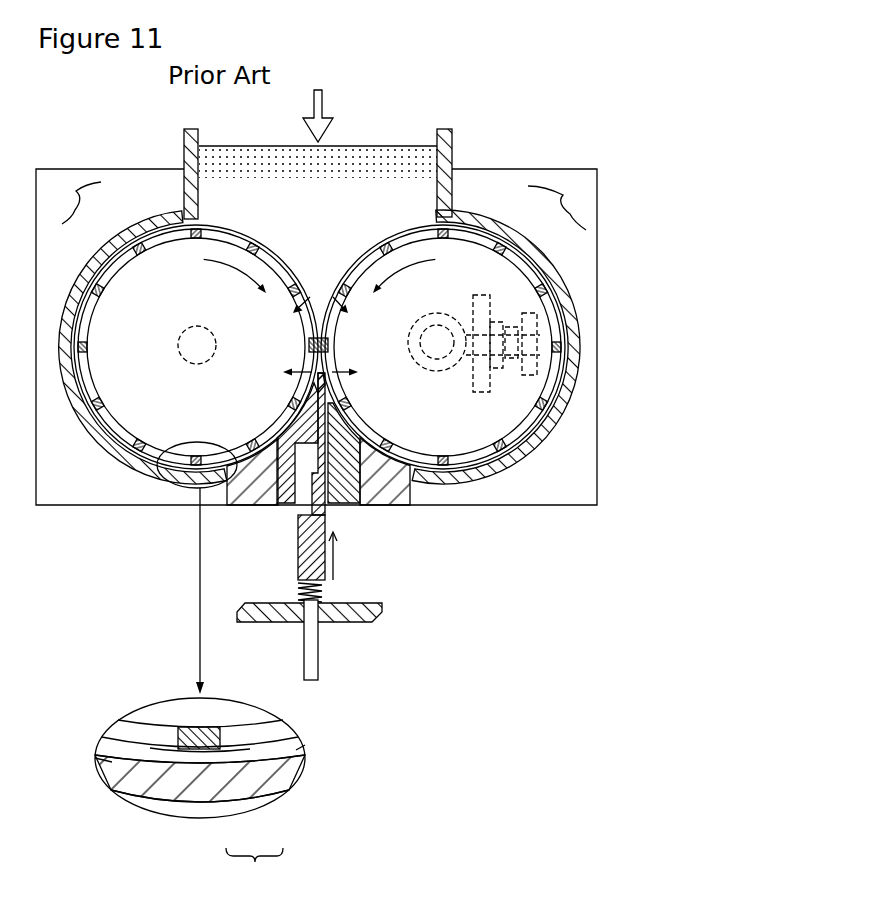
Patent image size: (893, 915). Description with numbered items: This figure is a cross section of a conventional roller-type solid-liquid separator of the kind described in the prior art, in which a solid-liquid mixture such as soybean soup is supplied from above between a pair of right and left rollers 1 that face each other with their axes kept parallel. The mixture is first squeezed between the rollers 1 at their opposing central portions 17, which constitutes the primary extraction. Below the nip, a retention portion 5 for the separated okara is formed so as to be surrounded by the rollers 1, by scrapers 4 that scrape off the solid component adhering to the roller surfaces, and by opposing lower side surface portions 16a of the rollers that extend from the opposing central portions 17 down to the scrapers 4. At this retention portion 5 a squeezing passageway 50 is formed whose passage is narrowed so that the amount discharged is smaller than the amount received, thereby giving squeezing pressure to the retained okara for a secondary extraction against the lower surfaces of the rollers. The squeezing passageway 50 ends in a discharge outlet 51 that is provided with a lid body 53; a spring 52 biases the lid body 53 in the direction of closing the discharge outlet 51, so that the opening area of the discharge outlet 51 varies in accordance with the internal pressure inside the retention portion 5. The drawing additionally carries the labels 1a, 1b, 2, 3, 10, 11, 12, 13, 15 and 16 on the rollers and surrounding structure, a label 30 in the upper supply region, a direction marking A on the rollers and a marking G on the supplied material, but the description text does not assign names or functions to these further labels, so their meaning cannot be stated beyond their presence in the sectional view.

The rollers 1 is at (321, 534).
The magnetic member 1a is at (130, 240).
The sleeve band portion 1b is at (110, 262).
The sleeve 2 is at (72, 378).
The housing 3 is at (130, 456).
The scrapers 4 is at (284, 421).
The retention portion 5 is at (313, 378).
The developer carrying band 10 is at (108, 275).
The band edge 11 is at (135, 752).
The drive gear 12 is at (513, 330).
The drive shaft 13 is at (496, 368).
The roller 15 is at (285, 263).
The magnetic pole 16 is at (262, 441).
The opposing lower side surface portions 16a is at (312, 367).
The opposing central portions 17 is at (333, 344).
The hopper 30 is at (338, 207).
The squeezing passageway 50 is at (337, 388).
The discharge outlet 51 is at (300, 497).
The spring 52 is at (326, 603).
The lid body 53 is at (300, 557).
The rotation direction A is at (320, 286).
The developer G is at (373, 165).